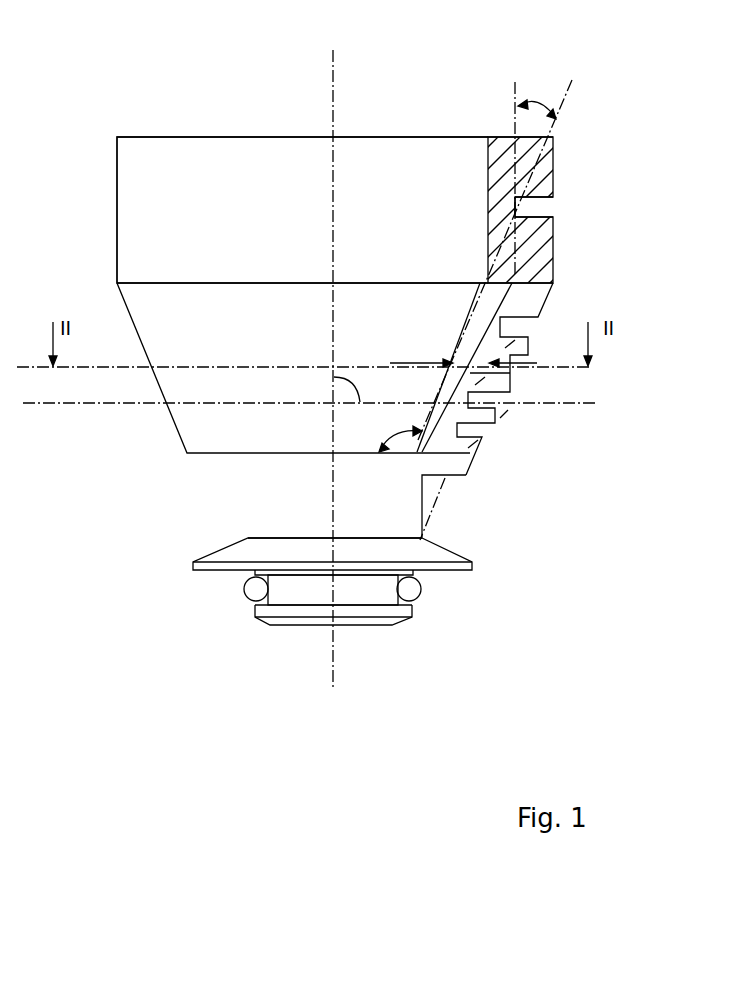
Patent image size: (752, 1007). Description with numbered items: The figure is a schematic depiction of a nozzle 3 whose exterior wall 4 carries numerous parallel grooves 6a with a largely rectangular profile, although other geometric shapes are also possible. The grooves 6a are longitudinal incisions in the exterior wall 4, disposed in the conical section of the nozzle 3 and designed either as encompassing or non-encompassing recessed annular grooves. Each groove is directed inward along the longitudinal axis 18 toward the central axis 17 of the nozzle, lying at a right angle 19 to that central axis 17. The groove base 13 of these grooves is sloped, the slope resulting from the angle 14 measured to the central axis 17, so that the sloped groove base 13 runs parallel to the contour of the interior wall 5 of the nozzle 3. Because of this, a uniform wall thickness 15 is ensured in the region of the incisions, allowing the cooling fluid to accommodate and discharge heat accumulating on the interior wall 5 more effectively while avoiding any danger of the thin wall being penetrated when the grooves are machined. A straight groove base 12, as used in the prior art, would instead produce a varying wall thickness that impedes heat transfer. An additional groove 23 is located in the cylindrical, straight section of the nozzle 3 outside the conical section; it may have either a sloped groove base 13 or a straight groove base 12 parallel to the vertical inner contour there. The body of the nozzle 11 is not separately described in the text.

The nozzle 3 is at (272, 108).
The exterior wall 4 is at (555, 258).
The interior wall 5 is at (477, 315).
The grooves 6a is at (542, 315).
The nozzle body 11 is at (437, 147).
The straight groove base 12 is at (515, 212).
The sloped groove base 13 is at (490, 520).
The angle 14 is at (540, 102).
The wall thickness 15 is at (473, 360).
The central axis 17 is at (333, 92).
The longitudinal axis 18 is at (537, 403).
The right angle 19 is at (357, 381).
The additional groove 23 is at (545, 207).